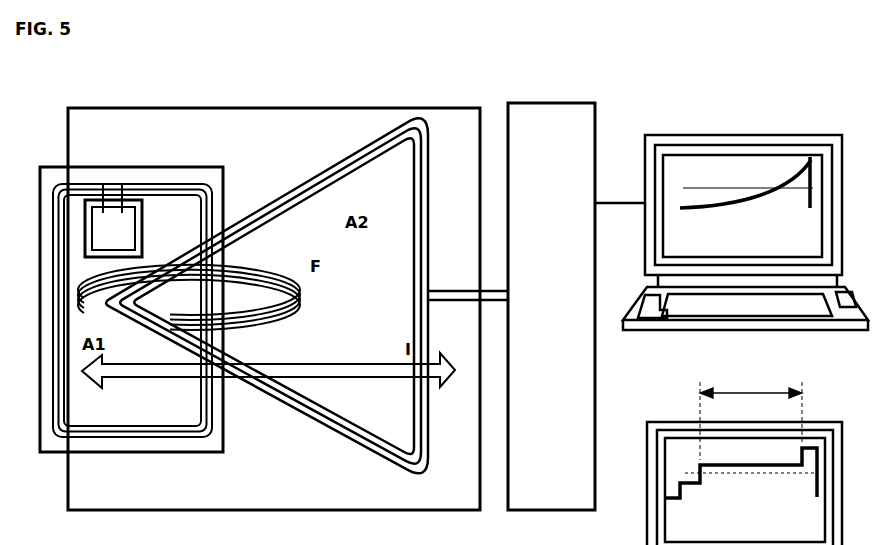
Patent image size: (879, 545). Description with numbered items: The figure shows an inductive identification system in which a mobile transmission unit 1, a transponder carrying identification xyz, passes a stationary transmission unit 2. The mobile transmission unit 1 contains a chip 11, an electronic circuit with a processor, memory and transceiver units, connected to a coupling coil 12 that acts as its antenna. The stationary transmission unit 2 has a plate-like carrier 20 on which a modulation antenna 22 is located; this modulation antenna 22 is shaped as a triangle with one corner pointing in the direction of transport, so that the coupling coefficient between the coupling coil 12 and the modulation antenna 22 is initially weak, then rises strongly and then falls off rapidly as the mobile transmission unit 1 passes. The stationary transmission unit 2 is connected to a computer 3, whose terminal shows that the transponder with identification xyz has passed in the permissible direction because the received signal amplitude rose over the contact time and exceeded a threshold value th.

The mobile transmission unit 1 is at (97, 165).
The chip 11 is at (113, 205).
The coupling coil 12 is at (189, 181).
The plate-like carrier 20 is at (290, 140).
The modulation antenna 22 is at (362, 148).
The stationary transmission unit 2 is at (551, 306).
The computer 3 is at (745, 340).